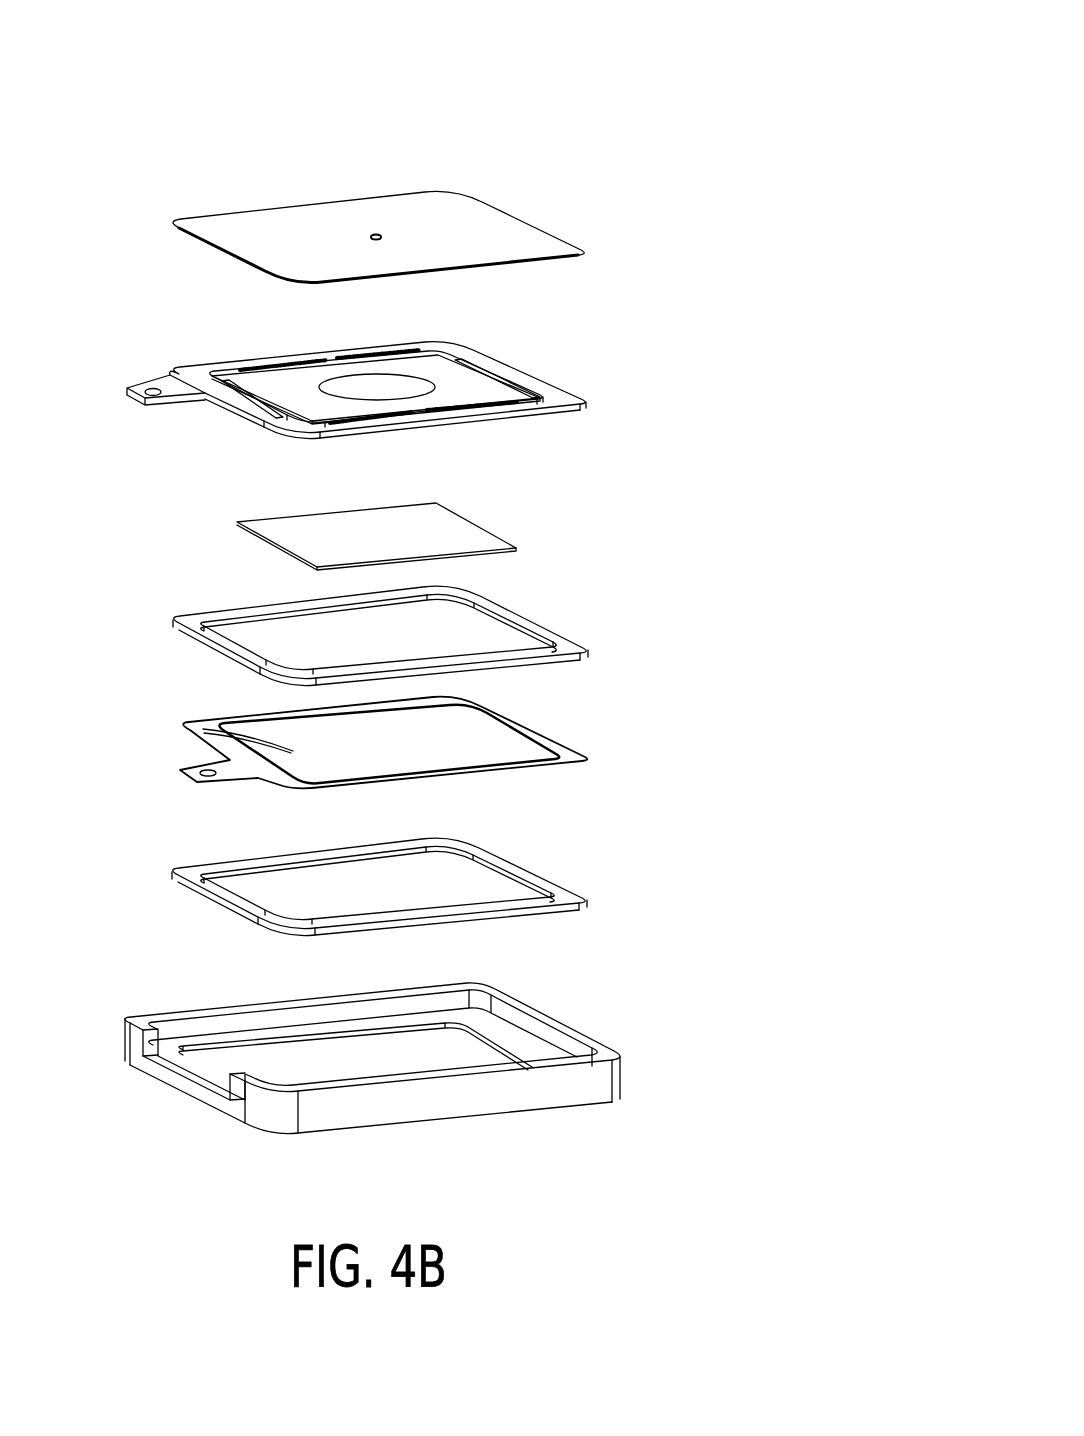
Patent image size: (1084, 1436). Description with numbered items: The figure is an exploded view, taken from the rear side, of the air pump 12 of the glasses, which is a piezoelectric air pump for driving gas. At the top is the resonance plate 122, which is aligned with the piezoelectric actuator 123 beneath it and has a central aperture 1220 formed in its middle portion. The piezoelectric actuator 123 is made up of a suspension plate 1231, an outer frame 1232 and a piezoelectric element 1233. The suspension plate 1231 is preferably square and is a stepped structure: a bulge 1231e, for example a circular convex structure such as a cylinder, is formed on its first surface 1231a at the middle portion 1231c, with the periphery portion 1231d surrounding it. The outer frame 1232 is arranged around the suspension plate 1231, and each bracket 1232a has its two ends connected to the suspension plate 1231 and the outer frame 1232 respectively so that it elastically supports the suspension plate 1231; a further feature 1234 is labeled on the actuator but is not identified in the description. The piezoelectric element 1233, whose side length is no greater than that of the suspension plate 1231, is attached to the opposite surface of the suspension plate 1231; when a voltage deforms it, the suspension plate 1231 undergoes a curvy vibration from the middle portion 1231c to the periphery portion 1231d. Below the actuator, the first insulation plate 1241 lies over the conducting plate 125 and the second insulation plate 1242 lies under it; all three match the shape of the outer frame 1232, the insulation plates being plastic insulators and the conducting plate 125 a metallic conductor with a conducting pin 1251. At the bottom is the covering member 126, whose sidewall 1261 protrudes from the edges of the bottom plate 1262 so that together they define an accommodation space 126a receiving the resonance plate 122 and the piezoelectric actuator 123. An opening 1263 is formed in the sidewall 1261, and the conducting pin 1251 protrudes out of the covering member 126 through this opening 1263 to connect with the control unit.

The air pump 12 is at (755, 47).
The resonance plate 122 is at (378, 241).
The central aperture 1220 is at (370, 237).
The piezoelectric actuator 123 is at (680, 301).
The suspension plate 1231 is at (397, 393).
The first surface 1231a is at (303, 382).
The middle portion 1231c is at (374, 384).
The periphery portion 1231d is at (456, 391).
The bulge 1231e is at (353, 388).
The outer frame 1232 is at (403, 420).
The bracket 1232a is at (182, 386).
The piezoelectric element 1233 is at (450, 537).
The side slot 1234 is at (452, 351).
The first insulation plate 1241 is at (568, 648).
The second insulation plate 1242 is at (568, 898).
The conducting plate 125 is at (403, 770).
The conducting pin 1251 is at (233, 768).
The covering member 126 is at (380, 1050).
The sidewall 1261 is at (537, 1030).
The bottom plate 1262 is at (270, 1063).
The opening 1263 is at (200, 1058).
The accommodation space 126a is at (348, 1050).